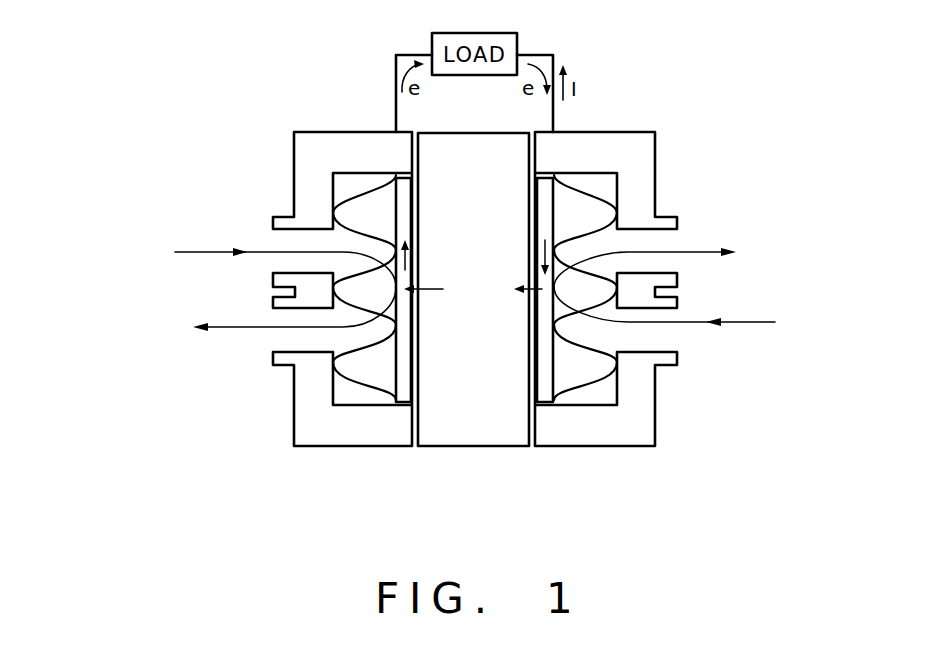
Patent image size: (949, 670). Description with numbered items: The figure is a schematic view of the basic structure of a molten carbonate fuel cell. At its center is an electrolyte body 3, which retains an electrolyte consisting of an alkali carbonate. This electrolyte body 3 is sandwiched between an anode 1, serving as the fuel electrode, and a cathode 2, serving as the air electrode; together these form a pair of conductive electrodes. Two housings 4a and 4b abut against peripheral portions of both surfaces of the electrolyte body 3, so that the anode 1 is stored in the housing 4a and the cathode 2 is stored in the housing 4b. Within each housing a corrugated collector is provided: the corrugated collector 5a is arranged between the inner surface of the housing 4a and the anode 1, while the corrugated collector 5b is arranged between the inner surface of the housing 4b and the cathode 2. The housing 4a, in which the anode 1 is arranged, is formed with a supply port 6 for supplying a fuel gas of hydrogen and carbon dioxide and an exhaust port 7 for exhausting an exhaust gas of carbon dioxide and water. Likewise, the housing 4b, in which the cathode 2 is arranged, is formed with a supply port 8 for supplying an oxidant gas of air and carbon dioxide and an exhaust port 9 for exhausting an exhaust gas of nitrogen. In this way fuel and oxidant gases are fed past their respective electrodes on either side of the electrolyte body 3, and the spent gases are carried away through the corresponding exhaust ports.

The anode 1 is at (402, 405).
The cathode 2 is at (552, 405).
The electrolyte body 3 is at (488, 447).
The housing 4a is at (330, 445).
The housing 4b is at (620, 445).
The corrugated collector 5a is at (350, 383).
The corrugated collector 5b is at (598, 382).
The supply port 6 is at (284, 240).
The exhaust port 7 is at (280, 350).
The supply port 8 is at (703, 341).
The exhaust port 9 is at (672, 238).